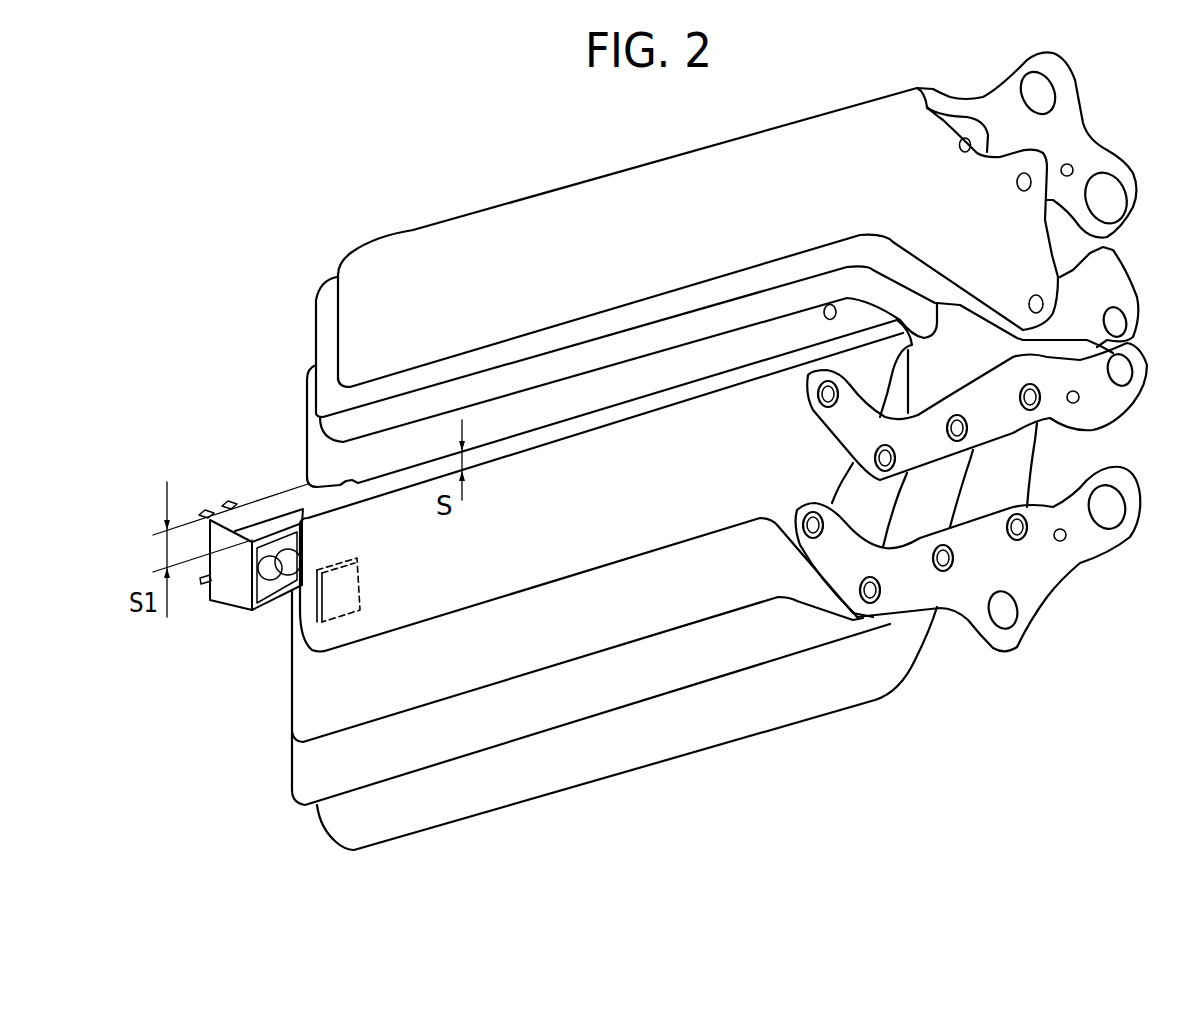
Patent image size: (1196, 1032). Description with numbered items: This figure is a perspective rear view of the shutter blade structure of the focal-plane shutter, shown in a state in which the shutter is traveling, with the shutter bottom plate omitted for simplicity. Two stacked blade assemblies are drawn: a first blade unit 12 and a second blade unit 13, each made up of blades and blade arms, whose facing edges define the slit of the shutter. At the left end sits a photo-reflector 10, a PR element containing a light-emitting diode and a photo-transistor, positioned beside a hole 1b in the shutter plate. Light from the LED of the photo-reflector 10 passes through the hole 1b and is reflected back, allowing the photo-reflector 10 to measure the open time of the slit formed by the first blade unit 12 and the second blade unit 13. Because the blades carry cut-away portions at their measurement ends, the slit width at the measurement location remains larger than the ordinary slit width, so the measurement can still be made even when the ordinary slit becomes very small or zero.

The second blade unit 13 is at (290, 352).
The first blade unit 12 is at (296, 822).
The photo-reflector 10 is at (227, 597).
The hole 1b is at (332, 620).